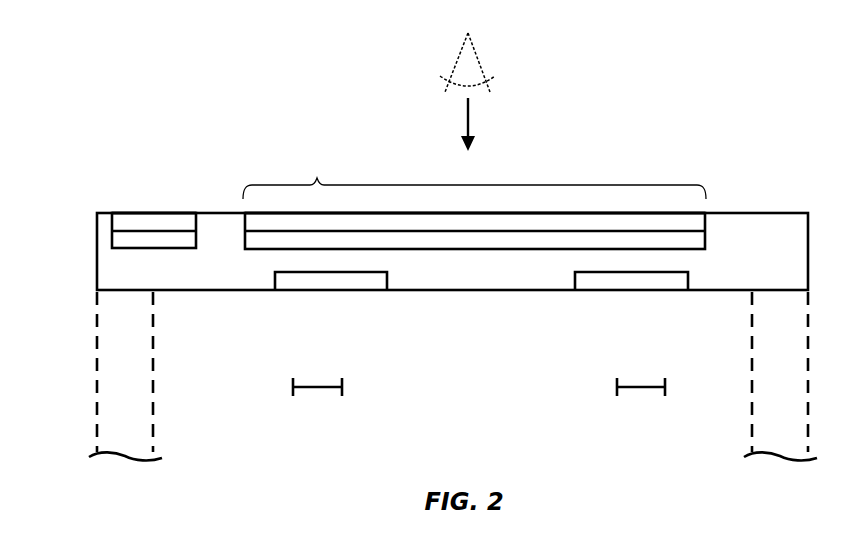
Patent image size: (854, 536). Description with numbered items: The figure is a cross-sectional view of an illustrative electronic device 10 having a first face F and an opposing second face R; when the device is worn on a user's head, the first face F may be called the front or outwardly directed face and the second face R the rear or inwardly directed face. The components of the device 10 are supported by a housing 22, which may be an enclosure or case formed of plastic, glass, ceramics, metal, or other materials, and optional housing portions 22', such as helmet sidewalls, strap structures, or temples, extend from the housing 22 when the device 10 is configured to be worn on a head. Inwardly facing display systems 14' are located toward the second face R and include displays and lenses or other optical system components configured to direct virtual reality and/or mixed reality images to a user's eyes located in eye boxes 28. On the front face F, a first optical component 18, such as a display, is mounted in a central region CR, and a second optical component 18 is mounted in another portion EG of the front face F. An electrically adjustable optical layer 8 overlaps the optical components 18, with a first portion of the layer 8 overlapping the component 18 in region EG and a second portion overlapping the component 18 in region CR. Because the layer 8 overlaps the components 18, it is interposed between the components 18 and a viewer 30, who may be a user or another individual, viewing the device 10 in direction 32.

The electronic device 10 is at (714, 98).
The housing 22 is at (420, 251).
The optional housing portions 22' is at (422, 376).
The optical component 18 is at (112, 241).
The electrically adjustable optical layer 8 is at (122, 218).
The inwardly facing display systems 14' is at (481, 296).
The eye boxes 28 is at (318, 390).
The viewer 30 is at (478, 55).
The direction 32 is at (468, 122).
The central region CR is at (474, 177).
The portion EG of front face EG is at (171, 181).
The first face F is at (610, 162).
The second face R is at (484, 341).